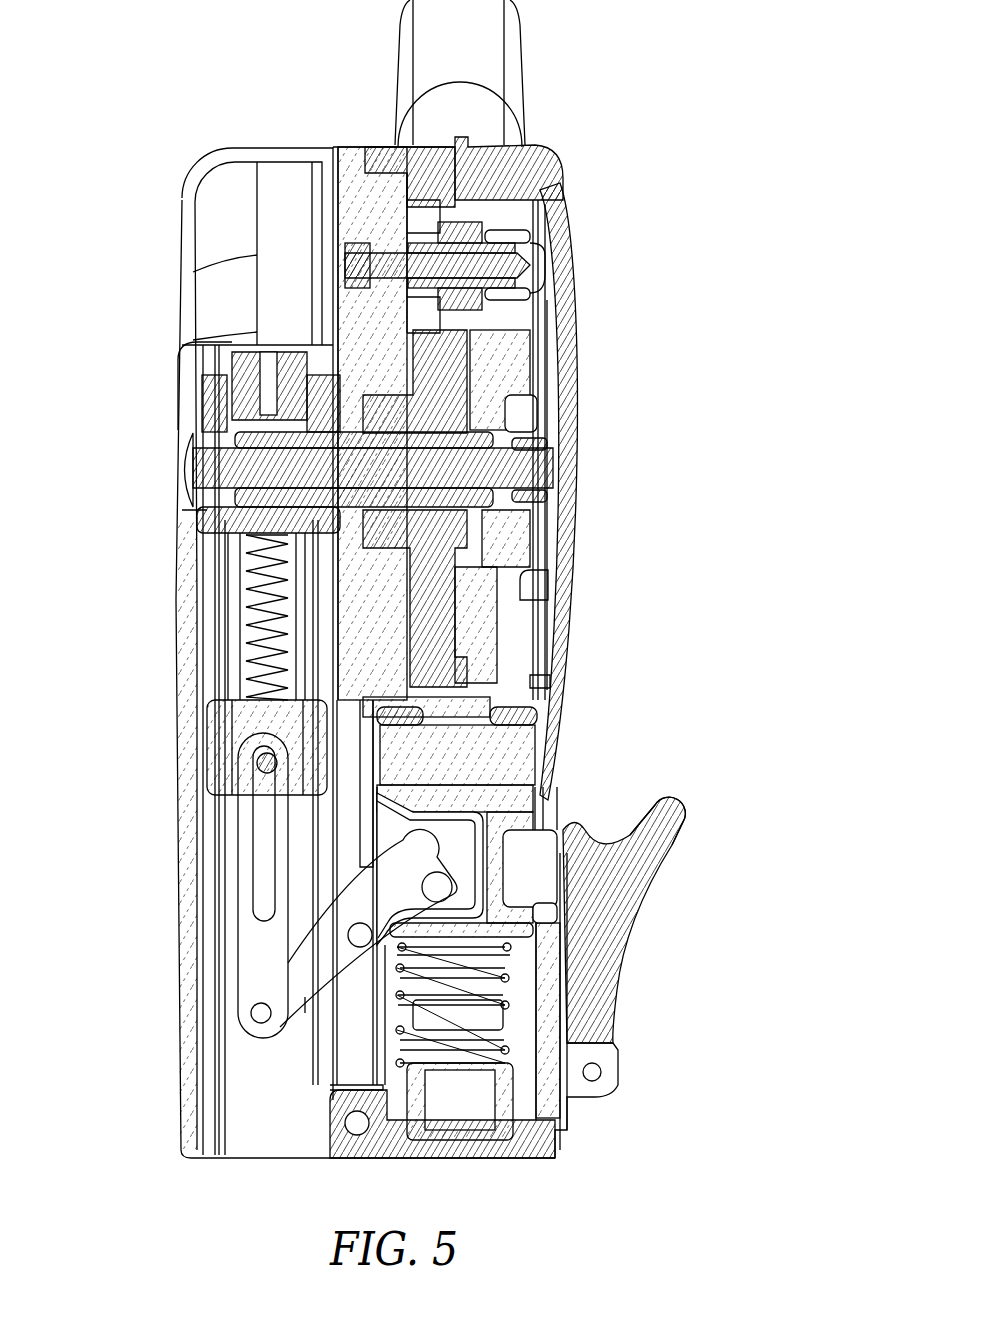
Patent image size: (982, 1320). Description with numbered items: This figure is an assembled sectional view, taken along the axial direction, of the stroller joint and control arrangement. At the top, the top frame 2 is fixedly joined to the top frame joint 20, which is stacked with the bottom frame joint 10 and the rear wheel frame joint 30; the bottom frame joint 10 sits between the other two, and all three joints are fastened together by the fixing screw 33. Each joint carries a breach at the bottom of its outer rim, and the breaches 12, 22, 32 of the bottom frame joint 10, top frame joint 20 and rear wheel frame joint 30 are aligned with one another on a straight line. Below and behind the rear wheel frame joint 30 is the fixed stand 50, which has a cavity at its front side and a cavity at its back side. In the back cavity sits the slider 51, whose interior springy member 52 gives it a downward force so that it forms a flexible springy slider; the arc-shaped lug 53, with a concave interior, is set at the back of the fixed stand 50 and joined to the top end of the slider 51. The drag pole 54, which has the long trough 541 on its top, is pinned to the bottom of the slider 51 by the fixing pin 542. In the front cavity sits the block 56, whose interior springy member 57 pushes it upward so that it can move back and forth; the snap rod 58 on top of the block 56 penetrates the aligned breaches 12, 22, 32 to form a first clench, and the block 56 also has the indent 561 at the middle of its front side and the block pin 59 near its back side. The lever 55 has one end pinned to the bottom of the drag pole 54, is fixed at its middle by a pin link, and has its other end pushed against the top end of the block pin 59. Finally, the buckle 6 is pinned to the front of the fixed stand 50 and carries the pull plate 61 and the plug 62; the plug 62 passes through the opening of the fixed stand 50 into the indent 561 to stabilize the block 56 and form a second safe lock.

The top frame 2 is at (488, 62).
The buckle 6 is at (600, 938).
The bottom frame joint 10 is at (388, 160).
The breach 12 is at (520, 703).
The top frame joint 20 is at (515, 170).
The breach 22 is at (535, 450).
The rear wheel frame joint 30 is at (375, 328).
The breach 32 is at (546, 452).
The fixing screw 33 is at (528, 476).
The fixed stand 50 is at (187, 689).
The slider 51 is at (215, 418).
The springy member 52 is at (250, 600).
The lug 53 is at (218, 158).
The drag pole 54 is at (250, 940).
The lever 55 is at (292, 1015).
The block 56 is at (525, 960).
The springy member 57 is at (480, 985).
The snap rod 58 is at (495, 756).
The block pin 59 is at (445, 885).
The pull plate 61 is at (675, 818).
The plug 62 is at (520, 880).
The long trough 541 is at (265, 870).
The fixing pin 542 is at (265, 763).
The indent 561 is at (520, 912).